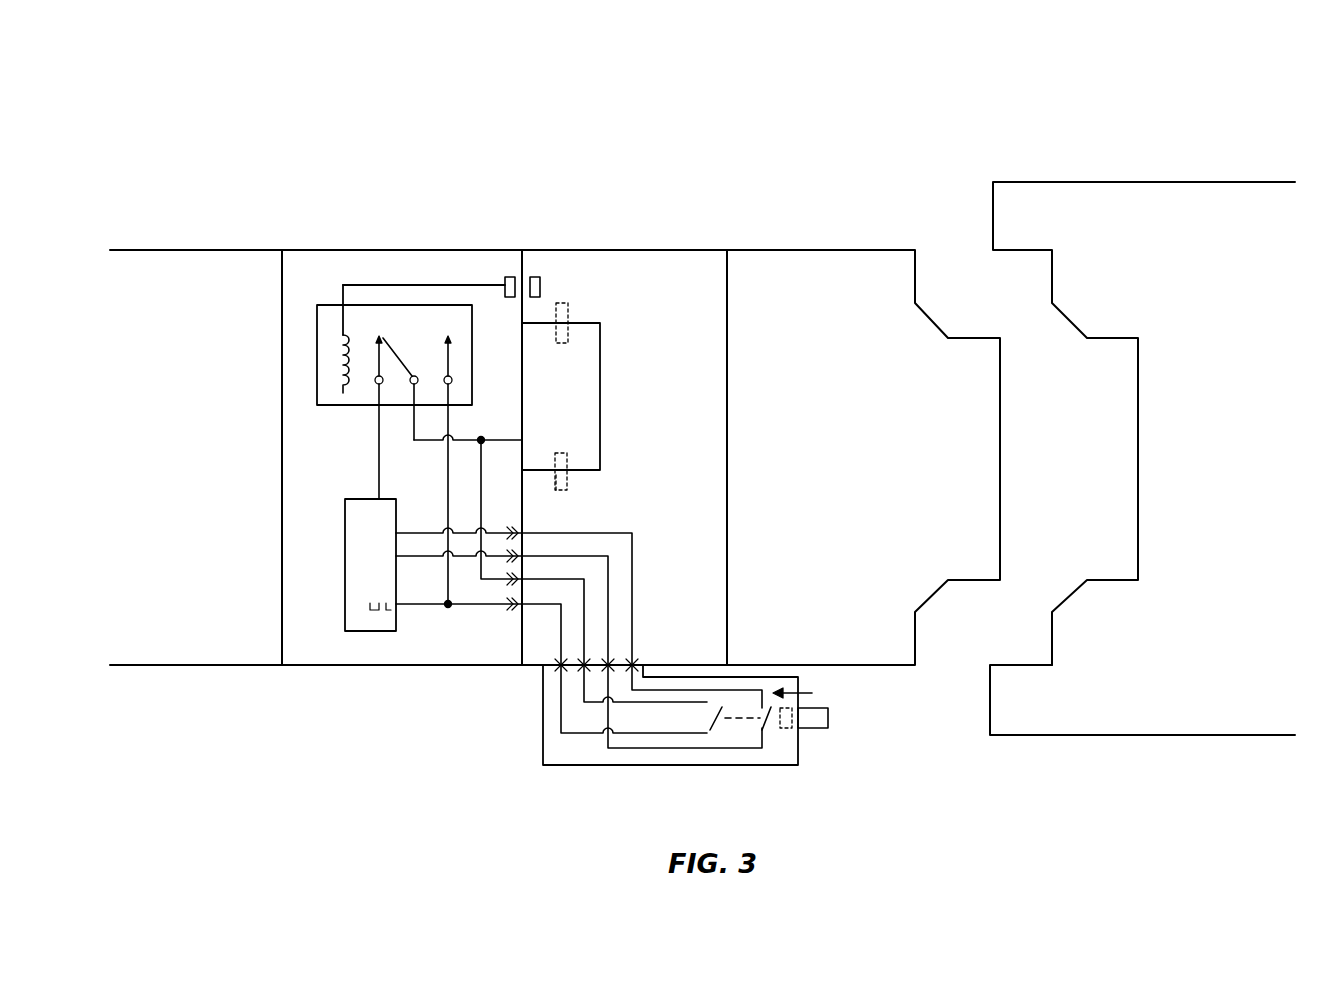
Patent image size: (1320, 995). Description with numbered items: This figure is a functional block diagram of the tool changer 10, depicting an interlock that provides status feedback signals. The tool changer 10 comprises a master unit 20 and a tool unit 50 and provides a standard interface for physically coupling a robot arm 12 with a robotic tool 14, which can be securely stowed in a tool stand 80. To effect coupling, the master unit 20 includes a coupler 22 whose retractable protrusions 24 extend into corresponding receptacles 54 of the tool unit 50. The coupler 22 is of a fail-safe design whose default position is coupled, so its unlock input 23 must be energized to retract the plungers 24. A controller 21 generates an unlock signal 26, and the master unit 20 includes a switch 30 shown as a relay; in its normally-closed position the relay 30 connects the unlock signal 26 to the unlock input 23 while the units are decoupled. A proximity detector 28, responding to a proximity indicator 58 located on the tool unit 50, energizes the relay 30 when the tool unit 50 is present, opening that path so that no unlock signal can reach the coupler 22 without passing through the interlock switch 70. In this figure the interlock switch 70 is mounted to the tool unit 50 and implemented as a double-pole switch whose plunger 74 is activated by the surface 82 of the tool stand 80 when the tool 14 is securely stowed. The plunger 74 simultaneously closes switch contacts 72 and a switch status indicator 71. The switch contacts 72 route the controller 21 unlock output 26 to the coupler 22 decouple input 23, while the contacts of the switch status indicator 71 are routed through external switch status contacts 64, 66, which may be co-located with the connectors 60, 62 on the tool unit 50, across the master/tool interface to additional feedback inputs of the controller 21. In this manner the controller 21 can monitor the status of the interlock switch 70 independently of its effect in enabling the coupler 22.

The tool changer 10 is at (853, 108).
The robot arm 12 is at (266, 250).
The tool 14 is at (882, 250).
The master unit 20 is at (500, 250).
The controller 21 is at (368, 499).
The coupler 22 is at (583, 323).
The unlock input 23 is at (512, 438).
The retractable protrusions 24 is at (567, 461).
The unlock signal 26 is at (413, 604).
The proximity detector 28 is at (505, 282).
The relay 30 is at (332, 304).
The tool unit 50 is at (708, 250).
The receptacles 54 is at (556, 490).
The proximity indicator 58 is at (541, 285).
The connectors 60 is at (560, 667).
The connectors 62 is at (585, 664).
The external switch status contacts 64 is at (609, 664).
The external switch status contacts 66 is at (633, 664).
The interlock switch 70 is at (757, 767).
The switch status indicator 71 is at (766, 731).
The switch contacts 72 is at (716, 728).
The plunger 74 is at (811, 729).
The tool stand 80 is at (1042, 182).
The surface 82 is at (990, 717).